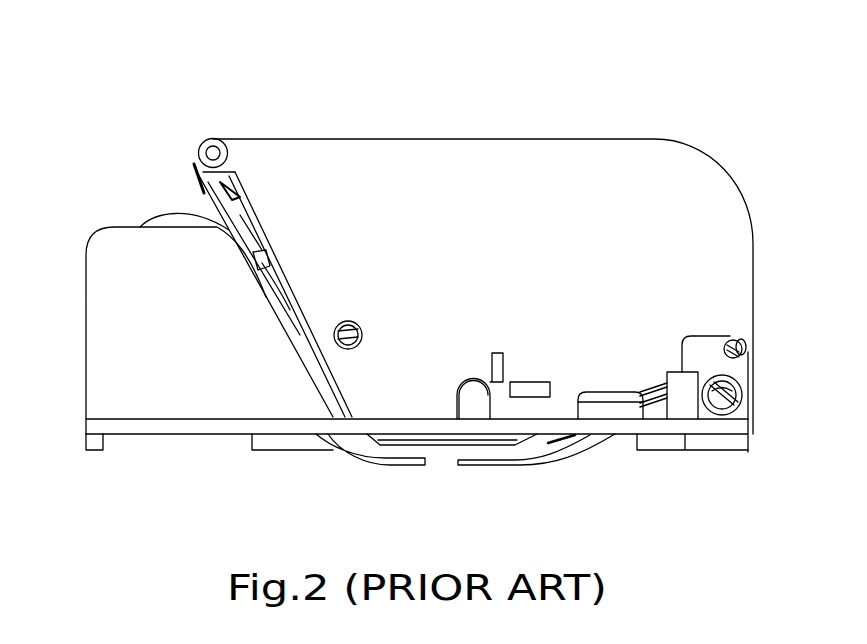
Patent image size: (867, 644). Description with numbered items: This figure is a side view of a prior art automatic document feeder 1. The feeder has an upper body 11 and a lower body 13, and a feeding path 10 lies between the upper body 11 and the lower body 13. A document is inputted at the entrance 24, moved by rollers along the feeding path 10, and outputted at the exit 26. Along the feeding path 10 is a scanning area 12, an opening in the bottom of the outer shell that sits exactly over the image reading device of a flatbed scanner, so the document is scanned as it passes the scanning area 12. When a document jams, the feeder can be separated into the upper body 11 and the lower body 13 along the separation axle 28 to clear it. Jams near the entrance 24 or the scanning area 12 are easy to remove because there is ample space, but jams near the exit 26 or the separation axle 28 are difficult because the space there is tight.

The automatic document feeder 1 is at (440, 108).
The feeding path 10 is at (373, 446).
The upper body 11 is at (560, 170).
The scanning area 12 is at (443, 455).
The lower body 13 is at (127, 313).
The entrance 24 is at (187, 197).
The exit 26 is at (750, 360).
The separation axle 28 is at (748, 346).